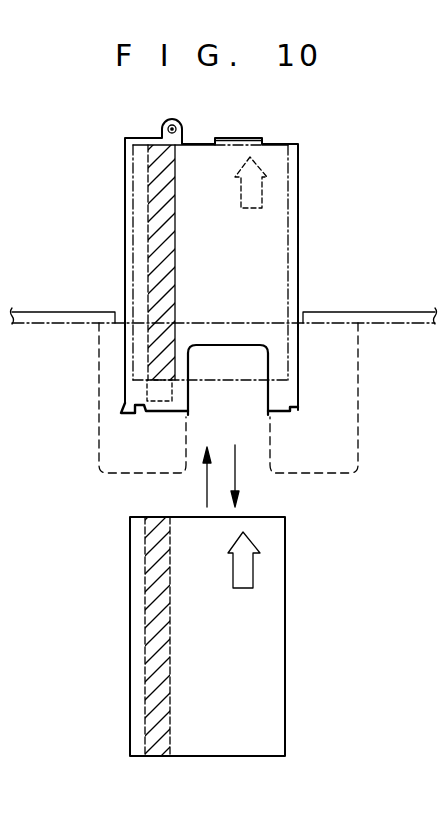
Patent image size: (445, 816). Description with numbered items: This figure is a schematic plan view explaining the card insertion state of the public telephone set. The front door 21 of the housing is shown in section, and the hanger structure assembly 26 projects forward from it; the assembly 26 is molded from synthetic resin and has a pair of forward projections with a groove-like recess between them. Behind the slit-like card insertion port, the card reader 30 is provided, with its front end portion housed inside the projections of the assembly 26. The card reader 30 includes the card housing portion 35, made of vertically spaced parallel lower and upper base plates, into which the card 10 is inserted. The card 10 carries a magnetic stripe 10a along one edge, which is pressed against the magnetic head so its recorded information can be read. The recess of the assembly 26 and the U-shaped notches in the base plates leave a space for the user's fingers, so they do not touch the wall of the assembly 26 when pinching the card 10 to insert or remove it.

The card 10 is at (277, 228).
The magnetic stripe 10a is at (172, 183).
The card reader 30 is at (123, 214).
The front door 21 is at (383, 325).
The hanger structure assembly 26 is at (350, 435).
The card housing portion 35 is at (163, 396).